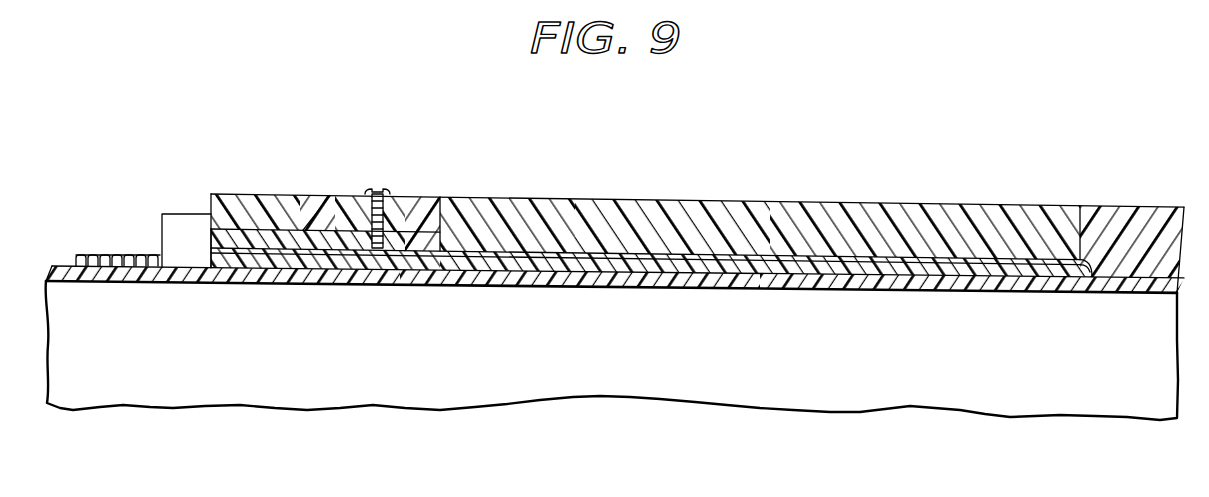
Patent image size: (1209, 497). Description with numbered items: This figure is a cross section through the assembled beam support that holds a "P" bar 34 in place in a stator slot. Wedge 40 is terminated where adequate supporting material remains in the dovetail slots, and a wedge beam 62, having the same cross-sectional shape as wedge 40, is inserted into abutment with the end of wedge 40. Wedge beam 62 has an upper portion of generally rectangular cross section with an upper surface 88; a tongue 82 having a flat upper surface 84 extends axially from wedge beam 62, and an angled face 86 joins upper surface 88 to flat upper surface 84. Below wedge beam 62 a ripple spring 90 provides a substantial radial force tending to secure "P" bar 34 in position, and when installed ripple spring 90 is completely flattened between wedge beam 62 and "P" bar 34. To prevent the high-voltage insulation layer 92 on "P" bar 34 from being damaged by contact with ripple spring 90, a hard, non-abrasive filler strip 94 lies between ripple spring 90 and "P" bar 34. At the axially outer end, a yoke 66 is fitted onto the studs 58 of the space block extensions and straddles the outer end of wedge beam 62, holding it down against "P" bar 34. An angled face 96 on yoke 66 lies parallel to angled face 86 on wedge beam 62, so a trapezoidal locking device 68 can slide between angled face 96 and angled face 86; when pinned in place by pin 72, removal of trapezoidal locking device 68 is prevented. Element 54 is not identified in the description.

The "P" bar 34 is at (118, 366).
The wedge 40 is at (1143, 207).
The contact block 54 is at (180, 214).
The stud 58 is at (100, 255).
The wedge beam 62 is at (772, 223).
The yoke 66 is at (273, 194).
The trapezoidal locking device 68 is at (418, 208).
The pin 72 is at (380, 189).
The tongue 82 is at (211, 242).
The flat upper surface 84 is at (242, 240).
The angled face 86 is at (425, 215).
The upper surface 88 is at (670, 200).
The ripple spring 90 is at (1088, 264).
The high-voltage insulation layer 92 is at (203, 283).
The filler strip 94 is at (1010, 272).
The angled face 96 is at (305, 210).